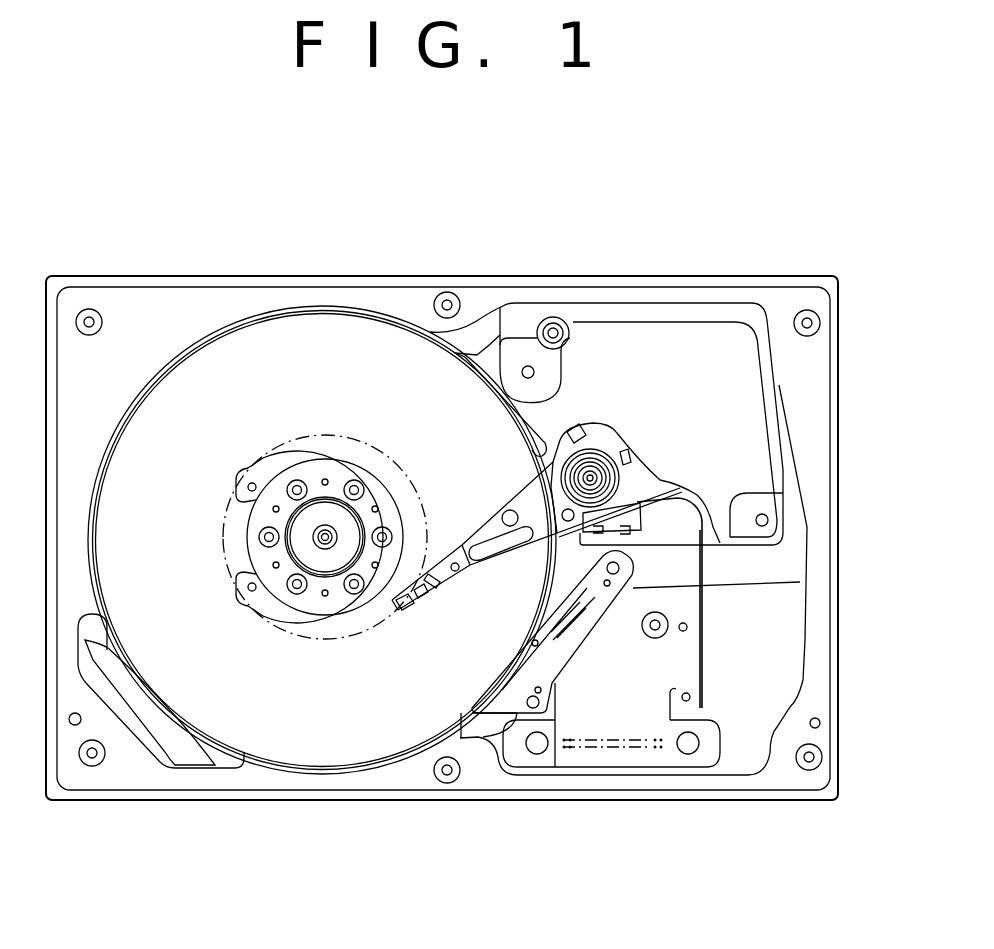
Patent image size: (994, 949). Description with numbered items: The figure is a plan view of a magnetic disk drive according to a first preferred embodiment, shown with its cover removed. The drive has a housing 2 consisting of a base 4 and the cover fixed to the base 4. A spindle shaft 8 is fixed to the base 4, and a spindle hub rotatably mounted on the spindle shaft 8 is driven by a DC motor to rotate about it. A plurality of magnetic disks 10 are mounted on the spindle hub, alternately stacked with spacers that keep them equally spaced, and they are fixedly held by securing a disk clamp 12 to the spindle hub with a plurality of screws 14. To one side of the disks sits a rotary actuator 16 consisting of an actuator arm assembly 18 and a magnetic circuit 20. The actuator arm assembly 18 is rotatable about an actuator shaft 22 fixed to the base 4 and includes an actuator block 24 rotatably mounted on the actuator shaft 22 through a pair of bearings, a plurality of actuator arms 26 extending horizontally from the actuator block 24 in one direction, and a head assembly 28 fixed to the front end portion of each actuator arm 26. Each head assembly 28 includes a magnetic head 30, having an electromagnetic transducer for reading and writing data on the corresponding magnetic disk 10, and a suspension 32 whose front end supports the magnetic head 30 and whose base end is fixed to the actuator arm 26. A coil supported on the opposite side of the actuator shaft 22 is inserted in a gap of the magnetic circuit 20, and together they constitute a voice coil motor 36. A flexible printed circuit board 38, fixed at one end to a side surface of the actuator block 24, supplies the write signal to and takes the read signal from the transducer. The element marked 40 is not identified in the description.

The housing 2 is at (505, 274).
The base 4 is at (352, 278).
The spindle shaft 8 is at (326, 526).
The magnetic disks 10 is at (185, 387).
The disk clamp 12 is at (358, 472).
The screws 14 is at (290, 482).
The rotary actuator 16 is at (527, 474).
The actuator arm assembly 18 is at (503, 565).
The magnetic circuit 20 is at (760, 398).
The actuator shaft 22 is at (597, 464).
The actuator block 24 is at (622, 473).
The actuator arms 26 is at (497, 513).
The head assembly 28 is at (435, 563).
The magnetic head 30 is at (378, 612).
The suspension 32 is at (418, 604).
The voice coil motor 36 is at (667, 344).
The flexible printed circuit board 38 is at (693, 510).
The filter 40 is at (155, 743).